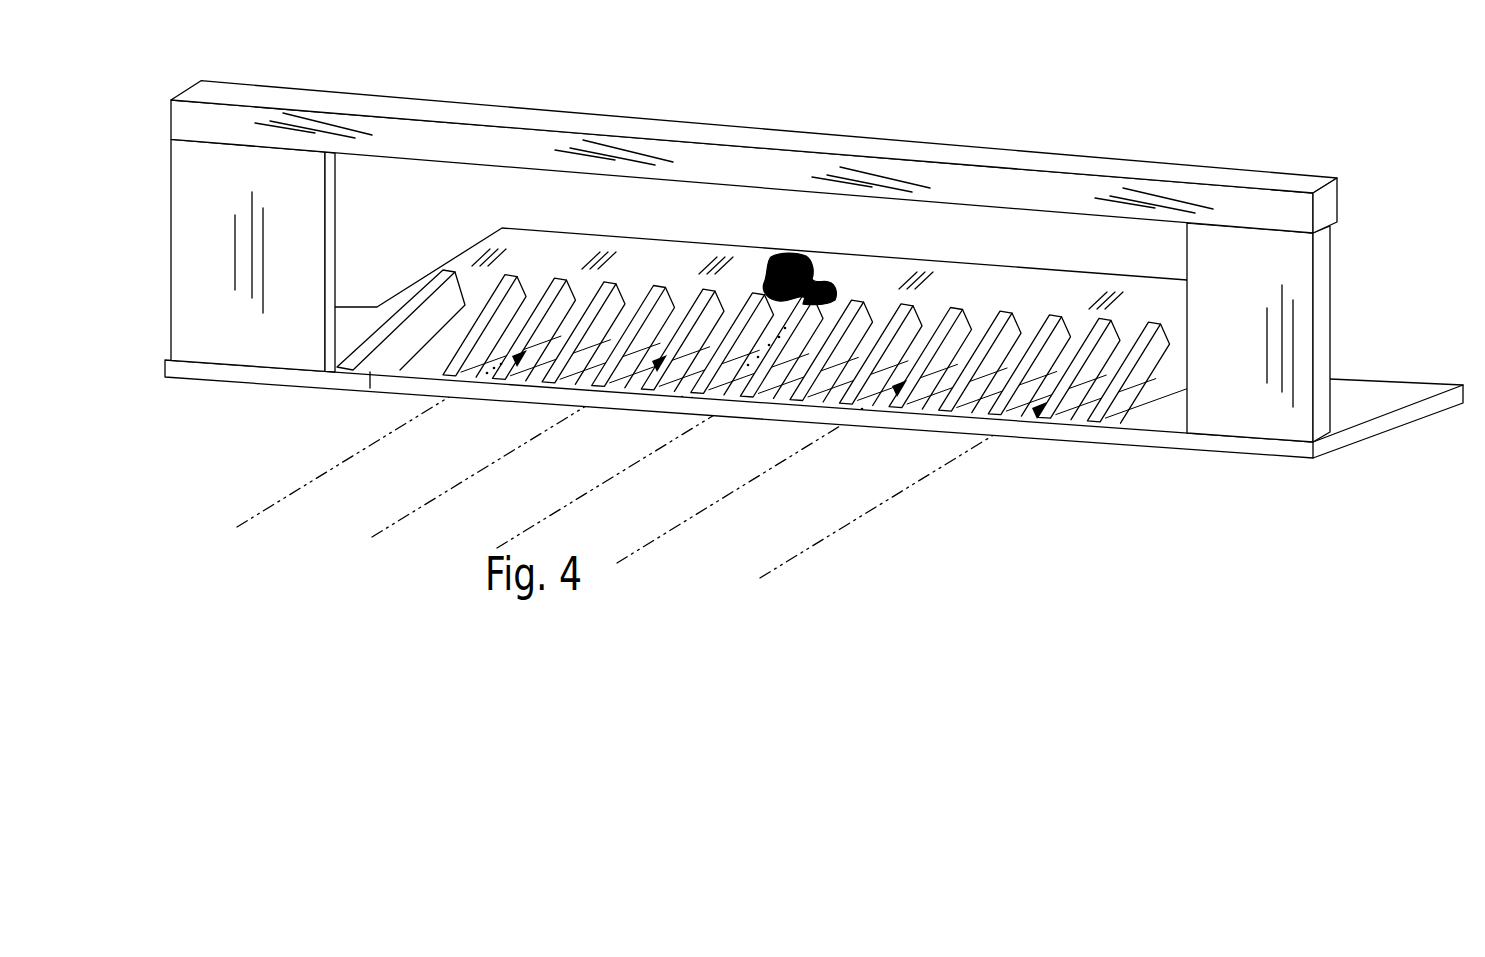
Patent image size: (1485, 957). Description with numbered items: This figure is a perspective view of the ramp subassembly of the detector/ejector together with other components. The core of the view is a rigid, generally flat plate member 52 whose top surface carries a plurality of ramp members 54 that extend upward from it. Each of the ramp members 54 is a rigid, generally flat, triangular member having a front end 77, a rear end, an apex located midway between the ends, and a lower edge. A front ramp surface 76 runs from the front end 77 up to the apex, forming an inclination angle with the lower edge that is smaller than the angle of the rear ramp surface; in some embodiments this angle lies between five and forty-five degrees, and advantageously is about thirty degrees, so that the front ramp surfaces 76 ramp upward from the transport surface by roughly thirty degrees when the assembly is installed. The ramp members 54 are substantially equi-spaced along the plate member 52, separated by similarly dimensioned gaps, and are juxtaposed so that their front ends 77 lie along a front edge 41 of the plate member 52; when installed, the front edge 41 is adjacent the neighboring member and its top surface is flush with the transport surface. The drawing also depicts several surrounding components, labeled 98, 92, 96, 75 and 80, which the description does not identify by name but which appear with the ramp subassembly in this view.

The top cover bar 98 is at (482, 147).
The left end wall 92 is at (203, 197).
The right end wall 96 is at (1218, 413).
The front edge 41 is at (1068, 436).
The plate member 52 is at (373, 371).
The front end 77 is at (340, 369).
The first deflector slat 75 is at (483, 255).
The front ramp surface 76 is at (556, 272).
The ramp members 54 is at (678, 307).
The debris particle 80 is at (806, 256).